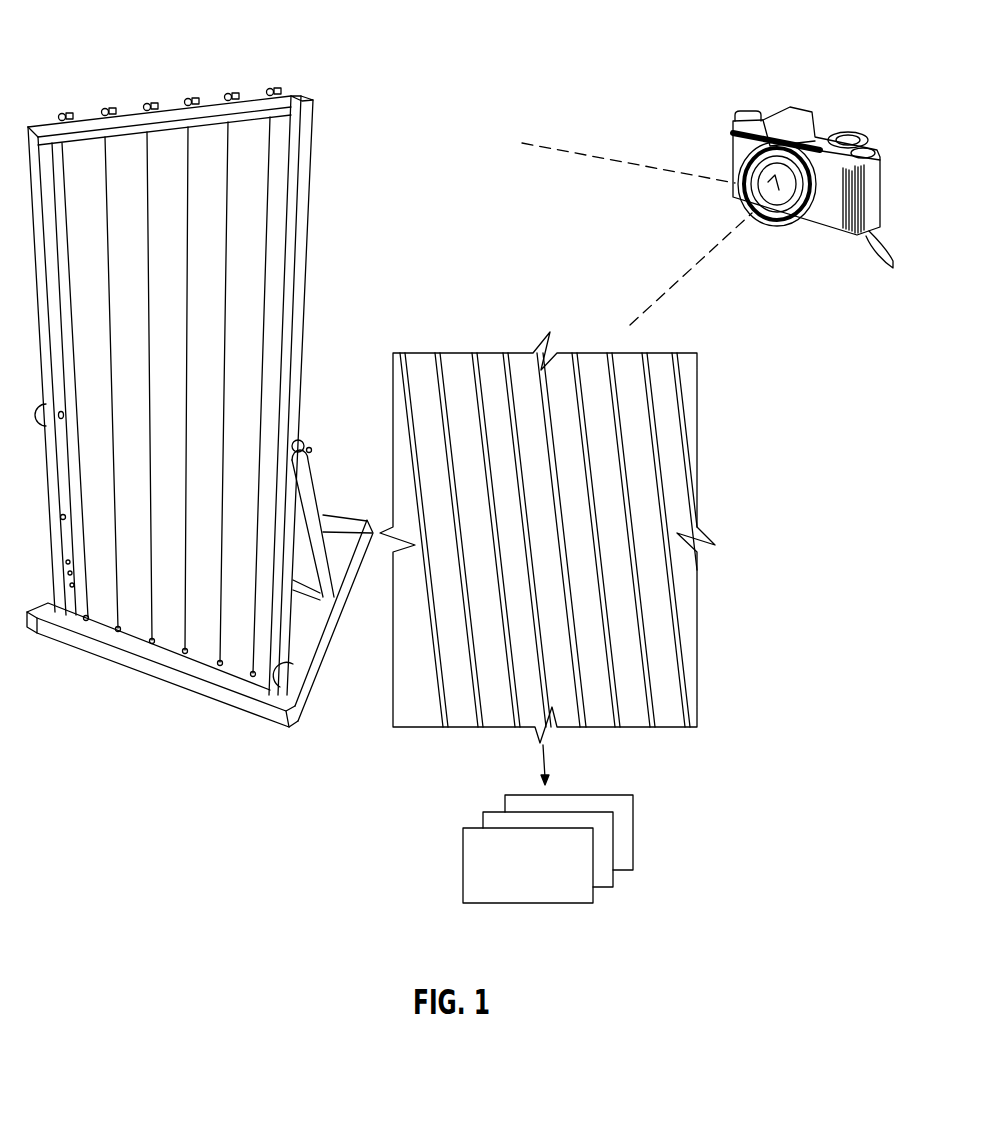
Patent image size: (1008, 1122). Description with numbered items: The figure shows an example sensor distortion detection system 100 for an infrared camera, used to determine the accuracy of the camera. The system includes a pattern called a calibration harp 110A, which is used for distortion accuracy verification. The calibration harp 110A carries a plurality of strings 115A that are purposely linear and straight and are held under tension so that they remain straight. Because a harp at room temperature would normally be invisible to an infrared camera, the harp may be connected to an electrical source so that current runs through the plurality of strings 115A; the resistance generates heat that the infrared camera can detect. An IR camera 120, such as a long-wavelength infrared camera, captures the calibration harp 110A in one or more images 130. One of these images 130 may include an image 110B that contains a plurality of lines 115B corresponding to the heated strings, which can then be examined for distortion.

The sensor distortion detection system 100 is at (819, 83).
The IR camera 120 is at (833, 270).
The calibration harp 110A is at (203, 695).
The plurality of strings 115A is at (102, 172).
The image 110B is at (432, 730).
The plurality of lines 115B is at (468, 368).
The images 130 is at (550, 897).